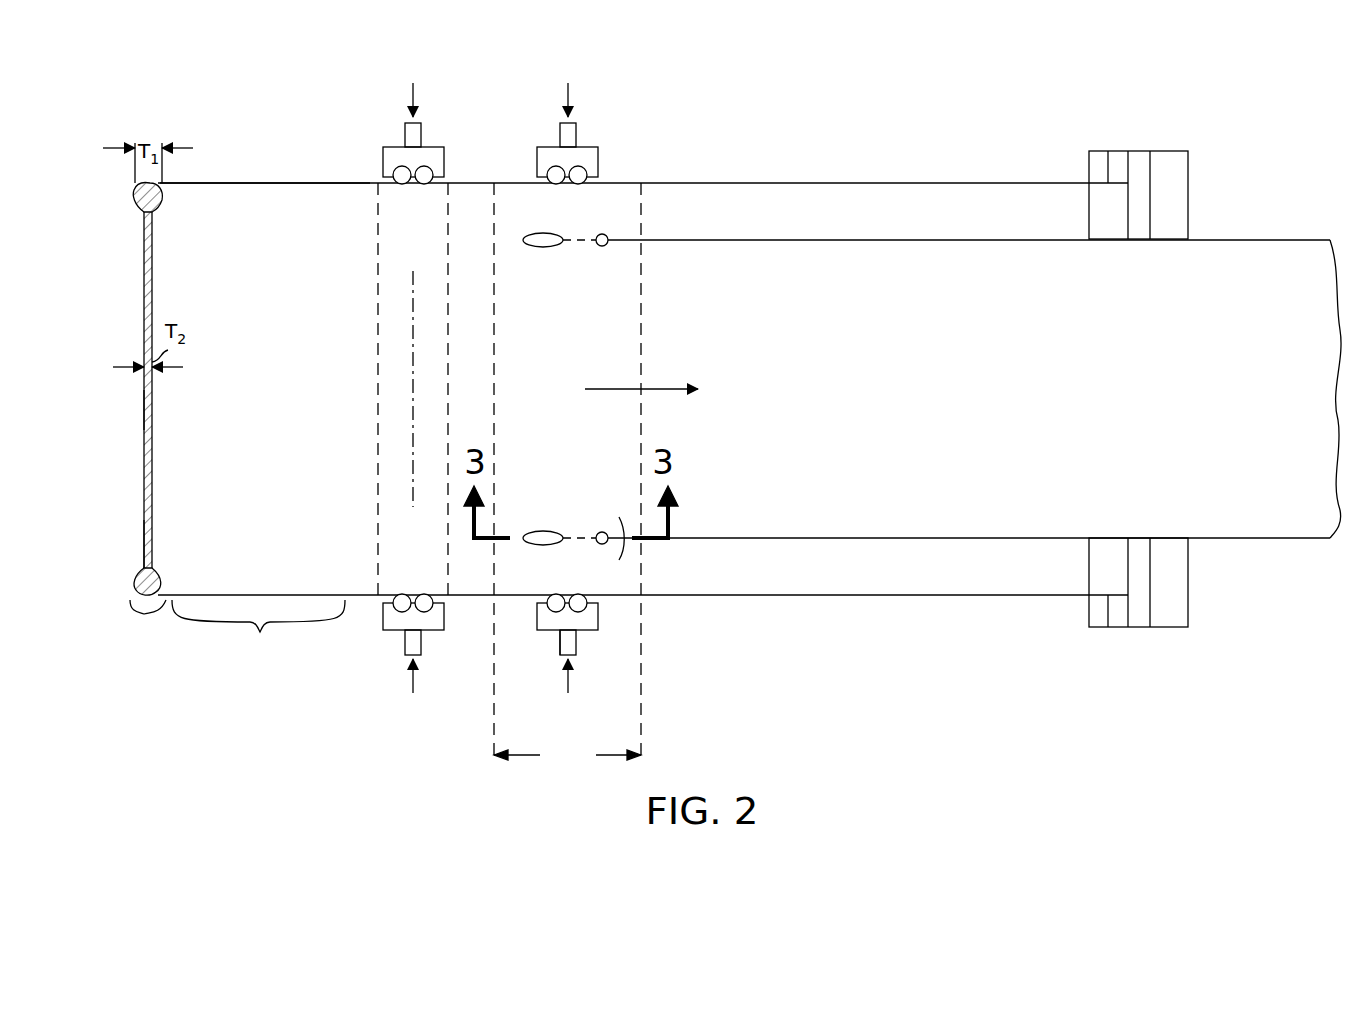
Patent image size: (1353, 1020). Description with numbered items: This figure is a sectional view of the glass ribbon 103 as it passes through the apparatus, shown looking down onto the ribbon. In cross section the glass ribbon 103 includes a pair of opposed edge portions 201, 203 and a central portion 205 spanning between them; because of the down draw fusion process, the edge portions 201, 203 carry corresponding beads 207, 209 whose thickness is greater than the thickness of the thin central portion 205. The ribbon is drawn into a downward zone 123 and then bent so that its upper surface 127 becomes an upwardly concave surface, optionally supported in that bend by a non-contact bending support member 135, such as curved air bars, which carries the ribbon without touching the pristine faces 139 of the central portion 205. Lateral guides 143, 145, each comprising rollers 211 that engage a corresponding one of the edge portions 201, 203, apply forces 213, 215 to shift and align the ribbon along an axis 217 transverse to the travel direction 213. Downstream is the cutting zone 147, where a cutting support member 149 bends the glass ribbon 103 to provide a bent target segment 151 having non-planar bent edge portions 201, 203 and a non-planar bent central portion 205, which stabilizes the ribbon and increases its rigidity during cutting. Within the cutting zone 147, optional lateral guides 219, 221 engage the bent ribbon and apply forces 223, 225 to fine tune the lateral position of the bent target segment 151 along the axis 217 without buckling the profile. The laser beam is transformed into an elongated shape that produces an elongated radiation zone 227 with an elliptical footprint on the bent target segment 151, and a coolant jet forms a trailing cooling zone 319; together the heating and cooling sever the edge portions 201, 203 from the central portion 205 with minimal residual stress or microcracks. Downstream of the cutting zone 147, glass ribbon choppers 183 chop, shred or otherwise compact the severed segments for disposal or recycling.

The glass ribbon 103 is at (138, 354).
The downward zone 123 is at (148, 625).
The upper surface 127 is at (225, 442).
The bending support member 135 is at (378, 268).
The face 139 is at (874, 384).
The lateral guide 143 is at (378, 626).
The lateral guide 145 is at (432, 147).
The cutting zone 147 is at (567, 755).
The cutting support member 149 is at (641, 290).
The bent target segment 151 is at (618, 540).
The glass ribbon chopper 183 is at (1188, 190).
The edge portion 201 is at (144, 548).
The edge portion 203 is at (144, 238).
The central portion 205 is at (144, 432).
The bead 207 is at (162, 580).
The bead 209 is at (162, 196).
The rollers 211 is at (402, 594).
The travel direction 213 is at (413, 682).
The force 215 is at (413, 96).
The axis 217 is at (413, 330).
The lateral guide 219 is at (556, 630).
The lateral guide 221 is at (598, 160).
The force 223 is at (568, 682).
The force 225 is at (568, 96).
The elongated radiation zone 227 is at (540, 531).
The cooling zone 319 is at (604, 531).